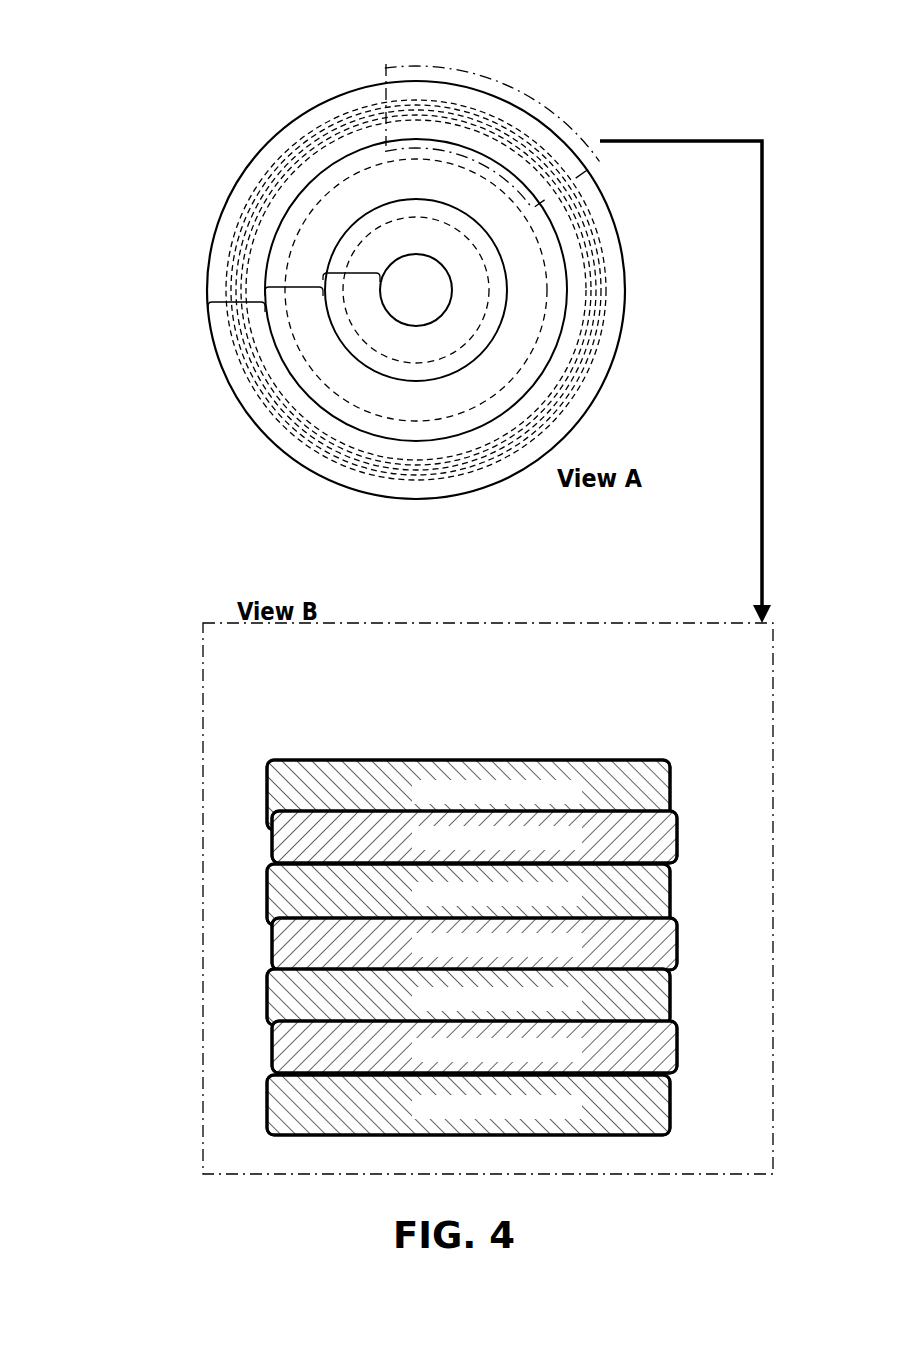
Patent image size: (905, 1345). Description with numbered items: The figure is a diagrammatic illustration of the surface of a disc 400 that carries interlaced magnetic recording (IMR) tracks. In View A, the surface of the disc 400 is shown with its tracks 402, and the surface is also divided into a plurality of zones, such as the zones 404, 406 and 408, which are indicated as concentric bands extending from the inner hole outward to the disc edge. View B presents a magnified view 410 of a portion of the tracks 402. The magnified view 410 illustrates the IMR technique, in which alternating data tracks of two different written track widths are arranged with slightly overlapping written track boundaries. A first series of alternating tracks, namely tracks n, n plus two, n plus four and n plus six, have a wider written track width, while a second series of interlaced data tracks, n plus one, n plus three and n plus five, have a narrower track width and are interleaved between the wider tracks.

The disc 400 is at (188, 121).
The tracks 402 is at (462, 478).
The zone 404 is at (350, 273).
The zone 406 is at (295, 287).
The zone 408 is at (237, 302).
The magnified view 410 is at (673, 626).